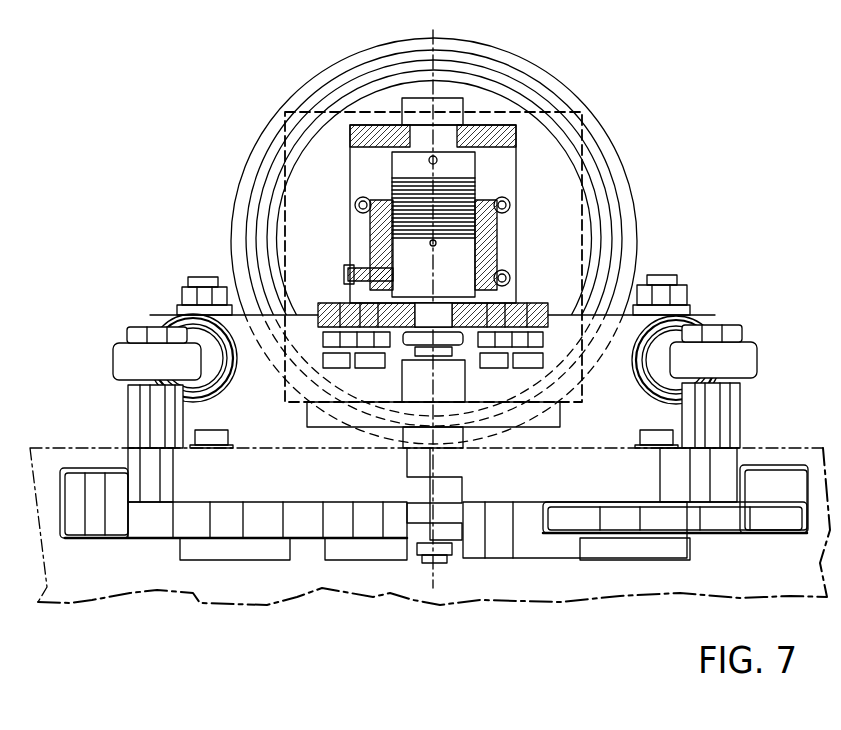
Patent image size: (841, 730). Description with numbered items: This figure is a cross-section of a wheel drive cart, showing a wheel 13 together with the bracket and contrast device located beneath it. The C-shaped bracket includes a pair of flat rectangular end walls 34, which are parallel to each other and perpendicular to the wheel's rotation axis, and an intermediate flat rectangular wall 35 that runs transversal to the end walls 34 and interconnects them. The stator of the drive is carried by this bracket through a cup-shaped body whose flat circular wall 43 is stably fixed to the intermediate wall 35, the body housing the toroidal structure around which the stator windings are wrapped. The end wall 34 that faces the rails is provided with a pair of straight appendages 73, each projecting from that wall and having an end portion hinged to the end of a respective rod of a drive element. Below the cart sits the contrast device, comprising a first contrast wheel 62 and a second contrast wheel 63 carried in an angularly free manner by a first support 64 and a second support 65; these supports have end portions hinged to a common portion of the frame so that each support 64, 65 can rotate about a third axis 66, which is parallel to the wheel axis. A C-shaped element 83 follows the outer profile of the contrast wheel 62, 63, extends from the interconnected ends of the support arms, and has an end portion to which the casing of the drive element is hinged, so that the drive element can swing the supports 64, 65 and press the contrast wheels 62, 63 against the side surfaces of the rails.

The wheel 13 is at (603, 120).
The end wall 34 is at (493, 127).
The intermediate flat rectangular wall 35 is at (367, 170).
The flat circular wall 43 is at (322, 197).
The straight appendage 73 is at (303, 320).
The C-shaped element 83 is at (285, 480).
The first contrast wheel 62 is at (100, 545).
The second contrast wheel 63 is at (813, 463).
The first support 64 is at (238, 582).
The second support 65 is at (568, 575).
The third axis 66 is at (430, 563).